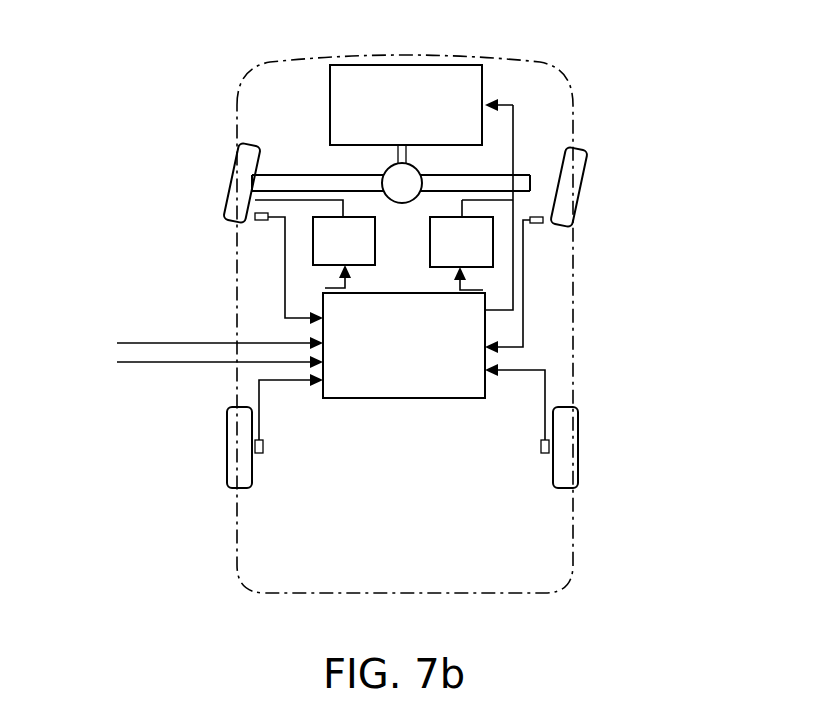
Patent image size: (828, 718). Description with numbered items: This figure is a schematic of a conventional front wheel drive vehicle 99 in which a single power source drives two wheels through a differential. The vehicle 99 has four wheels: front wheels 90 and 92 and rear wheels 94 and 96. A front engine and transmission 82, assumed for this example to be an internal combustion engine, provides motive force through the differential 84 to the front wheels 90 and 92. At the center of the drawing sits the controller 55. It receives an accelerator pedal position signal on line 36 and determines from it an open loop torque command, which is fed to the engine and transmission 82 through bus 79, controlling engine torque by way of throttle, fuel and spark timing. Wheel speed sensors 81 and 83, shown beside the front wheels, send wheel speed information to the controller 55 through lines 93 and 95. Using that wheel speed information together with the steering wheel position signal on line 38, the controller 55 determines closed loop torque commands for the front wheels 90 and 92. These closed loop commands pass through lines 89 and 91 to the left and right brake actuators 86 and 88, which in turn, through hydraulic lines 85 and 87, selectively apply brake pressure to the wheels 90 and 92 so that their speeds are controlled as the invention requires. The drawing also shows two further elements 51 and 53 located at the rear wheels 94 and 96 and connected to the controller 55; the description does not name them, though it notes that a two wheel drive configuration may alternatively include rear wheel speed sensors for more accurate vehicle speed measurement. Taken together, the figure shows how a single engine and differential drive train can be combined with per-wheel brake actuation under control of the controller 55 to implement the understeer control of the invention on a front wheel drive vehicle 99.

The line 36 is at (158, 343).
The line 38 is at (145, 362).
The left rear wheel sensor 51 is at (262, 392).
The right rear wheel sensor 53 is at (545, 395).
The controller 55 is at (457, 385).
The bus 79 is at (517, 140).
The wheel speed sensor 81 is at (261, 221).
The engine and transmission 82 is at (432, 64).
The wheel speed sensor 83 is at (535, 223).
The differential 84 is at (388, 172).
The hydraulic line 85 is at (347, 203).
The brake actuator 86 is at (313, 243).
The hydraulic line 87 is at (458, 197).
The brake actuator 88 is at (493, 255).
The line 89 is at (325, 288).
The front wheel 90 is at (235, 170).
The line 91 is at (470, 290).
The front wheel 92 is at (583, 164).
The line 93 is at (285, 280).
The wheel 94 is at (228, 424).
The line 95 is at (522, 337).
The wheel 96 is at (578, 427).
The vehicle 99 is at (585, 318).